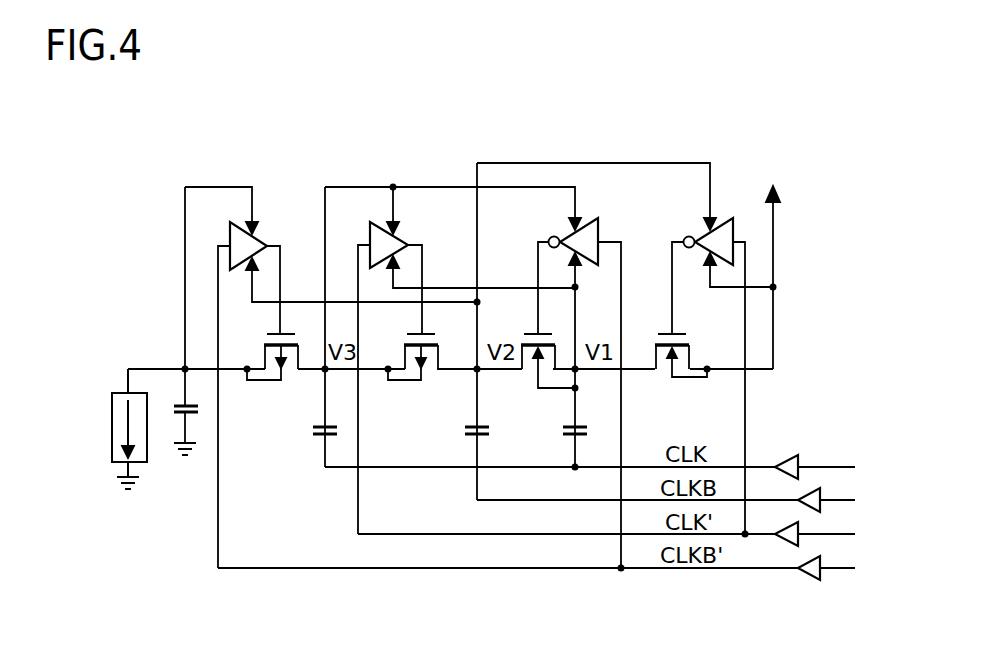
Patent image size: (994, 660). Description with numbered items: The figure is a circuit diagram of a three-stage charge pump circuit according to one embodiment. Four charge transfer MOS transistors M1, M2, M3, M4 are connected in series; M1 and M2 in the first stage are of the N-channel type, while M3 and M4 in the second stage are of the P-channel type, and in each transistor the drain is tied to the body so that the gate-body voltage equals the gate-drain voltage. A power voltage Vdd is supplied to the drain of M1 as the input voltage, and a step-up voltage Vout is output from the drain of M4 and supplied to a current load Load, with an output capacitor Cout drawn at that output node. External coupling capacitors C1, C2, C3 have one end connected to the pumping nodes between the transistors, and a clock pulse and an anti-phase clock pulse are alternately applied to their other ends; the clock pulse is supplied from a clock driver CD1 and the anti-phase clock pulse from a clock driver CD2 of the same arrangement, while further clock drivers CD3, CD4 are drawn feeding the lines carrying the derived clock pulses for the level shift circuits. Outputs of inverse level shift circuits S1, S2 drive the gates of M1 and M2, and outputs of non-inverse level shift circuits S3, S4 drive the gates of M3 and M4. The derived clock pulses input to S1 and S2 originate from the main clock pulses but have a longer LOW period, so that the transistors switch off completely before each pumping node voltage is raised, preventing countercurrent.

The inverse level shift circuit S1 is at (693, 240).
The inverse level shift circuit S2 is at (558, 241).
The non-inverse level shift circuit S3 is at (398, 236).
The non-inverse level shift circuit S4 is at (258, 236).
The charge transfer MOS transistor M1 is at (684, 354).
The charge transfer MOS transistor M2 is at (548, 354).
The charge transfer MOS transistor M3 is at (410, 354).
The charge transfer MOS transistor M4 is at (269, 354).
The coupling capacitor C1 is at (566, 442).
The coupling capacitor C2 is at (465, 447).
The coupling capacitor C3 is at (314, 447).
The output capacitor Cout is at (200, 409).
The clock driver CD1 is at (787, 455).
The clock driver CD2 is at (810, 488).
The clock driver CD3 is at (787, 480).
The clock driver CD4 is at (812, 580).
The current load Load is at (112, 458).
The power voltage Vdd is at (778, 266).
The step-up voltage Vout is at (140, 354).